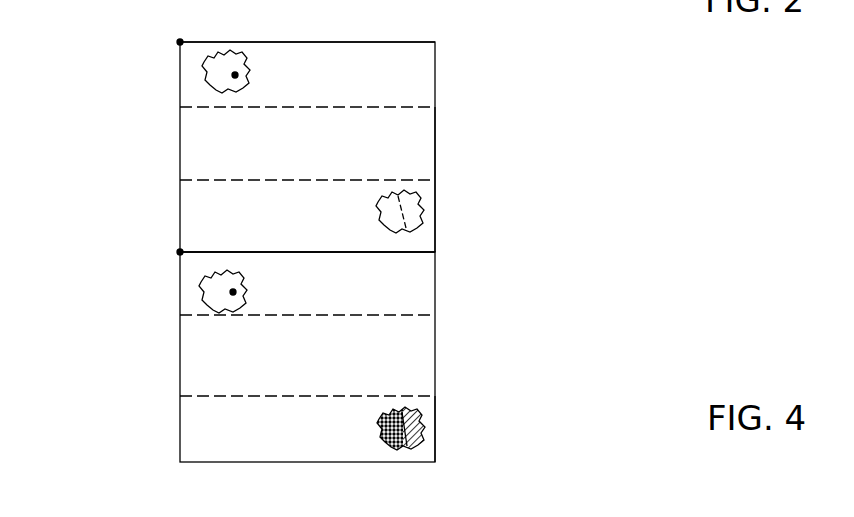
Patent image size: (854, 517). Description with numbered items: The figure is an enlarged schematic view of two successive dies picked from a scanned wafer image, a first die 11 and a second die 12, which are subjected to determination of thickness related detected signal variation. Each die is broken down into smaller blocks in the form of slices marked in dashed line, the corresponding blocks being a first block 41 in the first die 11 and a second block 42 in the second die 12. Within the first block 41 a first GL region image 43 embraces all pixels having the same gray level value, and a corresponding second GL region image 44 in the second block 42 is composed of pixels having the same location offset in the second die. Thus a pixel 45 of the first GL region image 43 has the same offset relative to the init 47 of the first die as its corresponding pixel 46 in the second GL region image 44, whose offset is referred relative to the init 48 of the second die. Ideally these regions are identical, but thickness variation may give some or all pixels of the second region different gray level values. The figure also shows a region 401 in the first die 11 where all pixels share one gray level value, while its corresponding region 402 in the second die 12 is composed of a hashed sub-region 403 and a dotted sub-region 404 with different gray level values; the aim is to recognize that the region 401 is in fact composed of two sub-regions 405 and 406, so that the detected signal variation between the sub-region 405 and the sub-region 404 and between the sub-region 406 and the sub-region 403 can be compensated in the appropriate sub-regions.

The first die 11 is at (170, 152).
The second die 12 is at (170, 357).
The first block 41 is at (407, 73).
The second block 42 is at (410, 282).
The first GL region image 43 is at (214, 57).
The second GL region image 44 is at (198, 290).
The pixel in first GL region image 45 is at (235, 75).
The corresponding pixel in second GL region image 46 is at (233, 292).
The init of first die 47 is at (180, 42).
The init of second die 48 is at (180, 252).
The region in first die 401 is at (442, 220).
The corresponding region in second die 402 is at (447, 420).
The hashed sub-region 403 is at (418, 445).
The dotted sub-region 404 is at (375, 425).
The first sub-region of region 401 405 is at (392, 212).
The second sub-region of region 401 406 is at (410, 205).